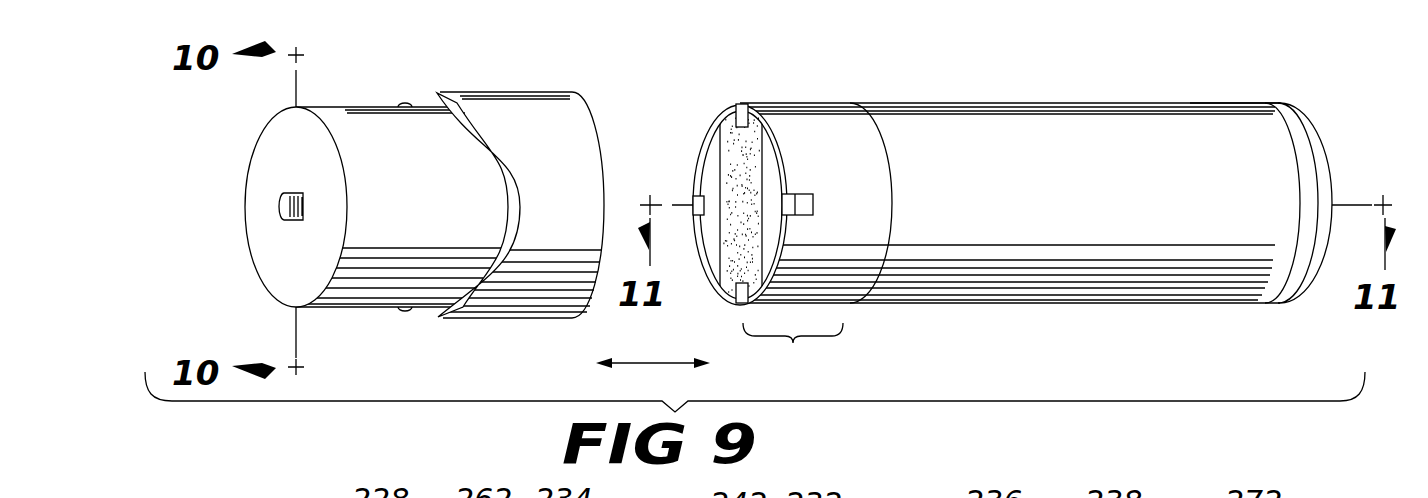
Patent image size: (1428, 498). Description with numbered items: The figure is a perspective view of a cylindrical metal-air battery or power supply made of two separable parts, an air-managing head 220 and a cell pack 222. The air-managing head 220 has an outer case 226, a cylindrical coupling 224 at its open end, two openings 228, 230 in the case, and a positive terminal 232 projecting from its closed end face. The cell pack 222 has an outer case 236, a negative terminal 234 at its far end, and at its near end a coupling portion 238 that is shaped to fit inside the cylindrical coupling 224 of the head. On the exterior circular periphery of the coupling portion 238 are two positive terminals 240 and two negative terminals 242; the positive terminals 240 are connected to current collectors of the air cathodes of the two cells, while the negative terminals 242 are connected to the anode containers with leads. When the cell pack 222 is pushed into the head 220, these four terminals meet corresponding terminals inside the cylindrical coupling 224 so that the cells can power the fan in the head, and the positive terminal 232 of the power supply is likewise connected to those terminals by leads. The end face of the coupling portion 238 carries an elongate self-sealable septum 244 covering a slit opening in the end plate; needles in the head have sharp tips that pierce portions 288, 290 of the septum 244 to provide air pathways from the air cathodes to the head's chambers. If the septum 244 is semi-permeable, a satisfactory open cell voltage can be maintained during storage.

The air-managing head 220 is at (512, 70).
The cell pack 222 is at (750, 73).
The cylindrical coupling 224 is at (503, 96).
The outer case 226 is at (428, 290).
The opening 228 is at (404, 103).
The opening 230 is at (404, 311).
The positive terminal 232 is at (282, 205).
The negative terminal 234 is at (1330, 163).
The outer case 236 is at (1190, 103).
The coupling portion 238 is at (793, 344).
The positive terminal 240 is at (740, 118).
The negative terminal 242 is at (698, 216).
The elongate self-sealable septum 244 is at (752, 188).
The portion of the septum 288 is at (742, 157).
The portion of the septum 290 is at (743, 252).